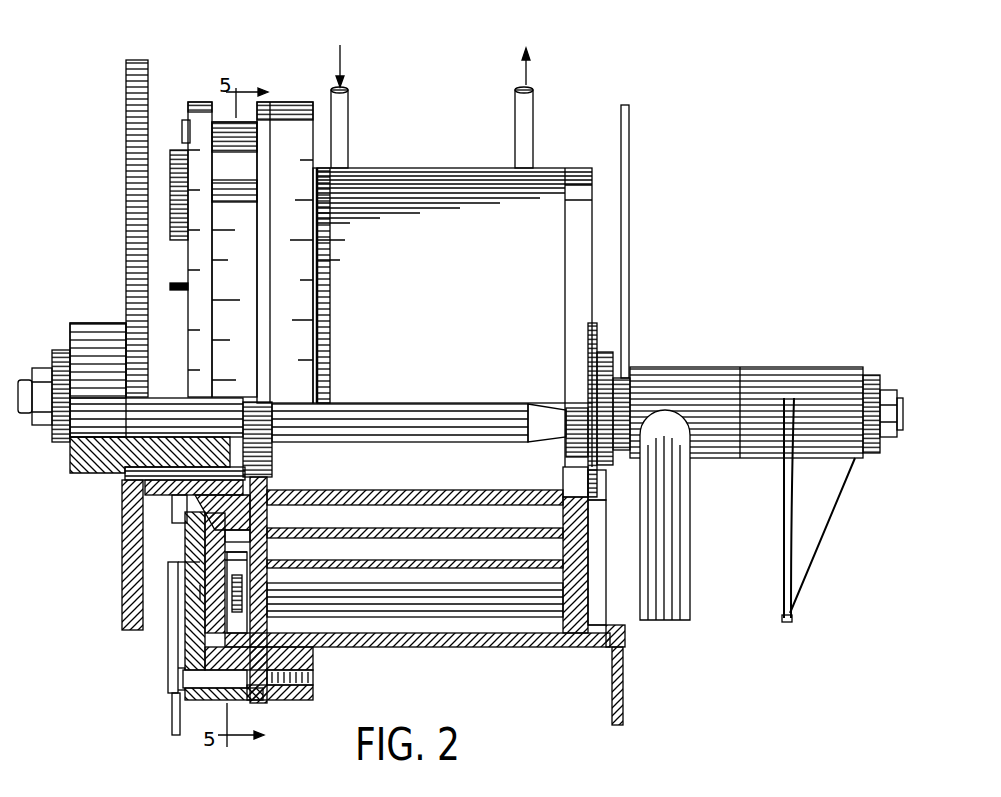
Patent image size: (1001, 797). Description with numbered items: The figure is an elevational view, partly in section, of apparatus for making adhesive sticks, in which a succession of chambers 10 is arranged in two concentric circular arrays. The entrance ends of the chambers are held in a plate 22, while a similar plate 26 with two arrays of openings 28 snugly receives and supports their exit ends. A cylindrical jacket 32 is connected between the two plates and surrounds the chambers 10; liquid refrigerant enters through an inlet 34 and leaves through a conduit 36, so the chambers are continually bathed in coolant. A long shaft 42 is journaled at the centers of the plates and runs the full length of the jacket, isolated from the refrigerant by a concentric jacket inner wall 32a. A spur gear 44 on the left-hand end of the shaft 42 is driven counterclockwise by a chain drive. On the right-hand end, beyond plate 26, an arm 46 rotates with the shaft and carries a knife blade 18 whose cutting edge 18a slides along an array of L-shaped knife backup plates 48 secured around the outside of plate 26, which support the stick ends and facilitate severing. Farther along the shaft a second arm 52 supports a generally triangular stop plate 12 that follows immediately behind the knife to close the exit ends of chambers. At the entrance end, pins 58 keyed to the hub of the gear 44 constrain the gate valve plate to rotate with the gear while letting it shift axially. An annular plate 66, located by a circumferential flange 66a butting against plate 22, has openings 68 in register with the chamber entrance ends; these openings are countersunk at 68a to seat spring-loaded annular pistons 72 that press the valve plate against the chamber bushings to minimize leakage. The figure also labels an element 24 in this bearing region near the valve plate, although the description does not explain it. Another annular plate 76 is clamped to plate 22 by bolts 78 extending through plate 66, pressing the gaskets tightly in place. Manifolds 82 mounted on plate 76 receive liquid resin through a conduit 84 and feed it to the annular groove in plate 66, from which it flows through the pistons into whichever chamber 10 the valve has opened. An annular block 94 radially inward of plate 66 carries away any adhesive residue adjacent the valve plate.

The chamber 10 is at (398, 534).
The stop plate 12 is at (786, 619).
The knife blade 18 is at (625, 615).
The cutting edge 18a is at (600, 530).
The plate 22 is at (270, 538).
The bearing 24 is at (247, 562).
The plate 26 is at (580, 608).
The openings 28 is at (557, 545).
The cylindrical jacket 32 is at (440, 180).
The jacket inner wall 32a is at (473, 493).
The inlet 34 is at (347, 108).
The conduit 36 is at (533, 118).
The shaft 42 is at (352, 428).
The spur gear 44 is at (126, 106).
The arm 46 is at (668, 492).
The knife backup plates 48 is at (580, 642).
The second arm 52 is at (813, 528).
The pins 58 is at (125, 470).
The annular plate 66 is at (210, 630).
The circumferential flange 66a is at (243, 650).
The openings 68 is at (190, 548).
The countersink 68a is at (183, 565).
The pistons 72 is at (250, 516).
The annular plate 76 is at (195, 590).
The bolts 78 is at (222, 121).
The manifolds 82 is at (175, 652).
The conduit 84 is at (172, 708).
The annular block 94 is at (197, 505).